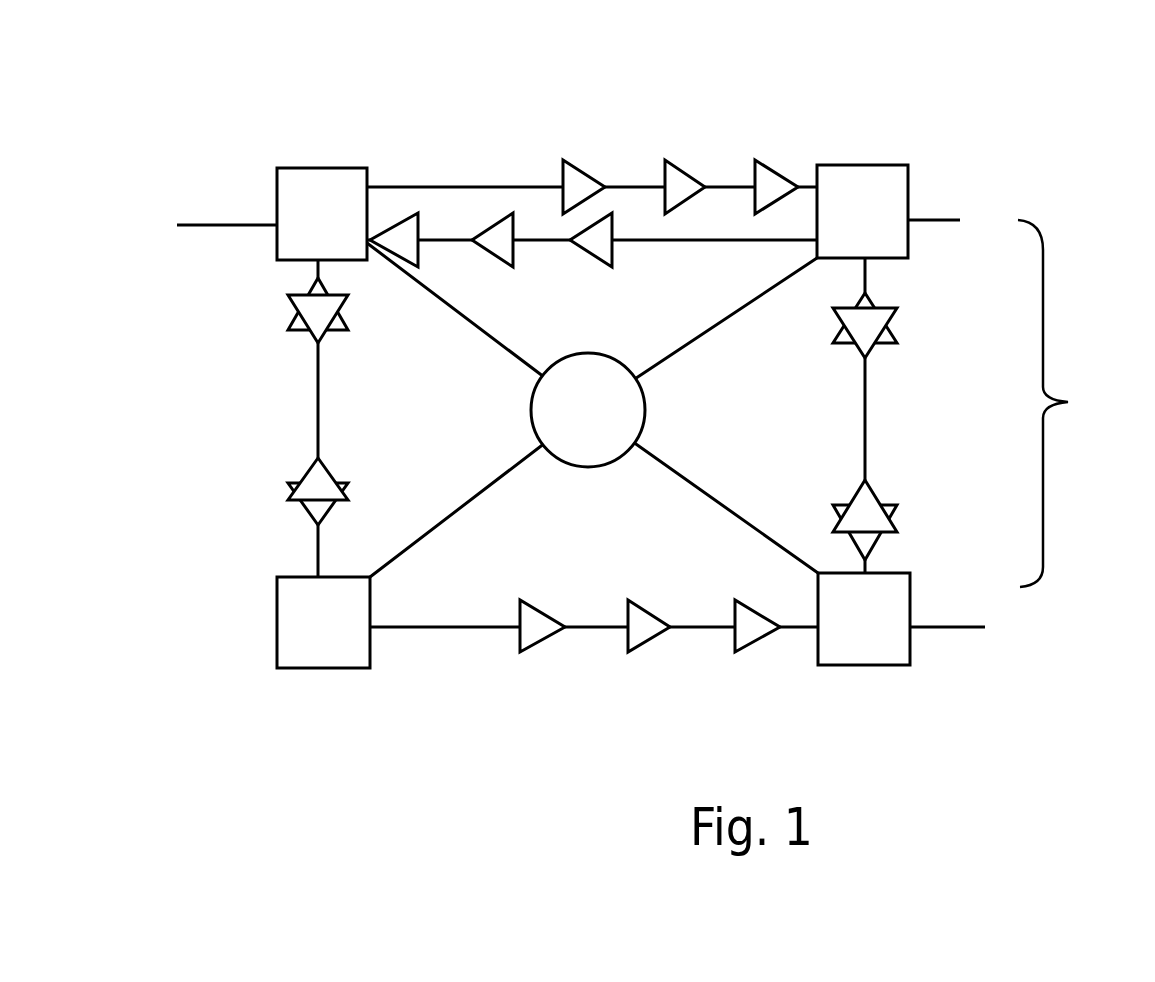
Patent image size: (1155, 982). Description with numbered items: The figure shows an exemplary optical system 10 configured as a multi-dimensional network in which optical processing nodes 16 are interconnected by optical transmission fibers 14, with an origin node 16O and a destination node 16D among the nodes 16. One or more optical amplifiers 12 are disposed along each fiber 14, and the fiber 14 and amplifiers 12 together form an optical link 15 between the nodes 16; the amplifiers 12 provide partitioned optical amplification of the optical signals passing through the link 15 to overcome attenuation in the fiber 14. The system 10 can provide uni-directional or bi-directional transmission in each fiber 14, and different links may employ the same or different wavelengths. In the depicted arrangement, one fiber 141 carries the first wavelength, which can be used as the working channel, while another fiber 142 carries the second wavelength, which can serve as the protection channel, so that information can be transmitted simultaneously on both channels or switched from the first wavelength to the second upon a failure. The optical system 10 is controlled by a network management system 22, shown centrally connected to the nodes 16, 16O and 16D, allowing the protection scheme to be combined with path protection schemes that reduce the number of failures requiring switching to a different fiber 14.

The optical system 10 is at (477, 770).
The optical amplifier 12 is at (753, 170).
The optical transmission fiber 14 is at (643, 245).
The optical transmission fiber 141 is at (472, 185).
The optical transmission fiber 142 is at (937, 390).
The optical link 15 is at (1072, 403).
The optical processing node 16 is at (335, 670).
The optical processing node 16O is at (277, 167).
The optical processing node 16D is at (832, 165).
The network management system 22 is at (645, 410).